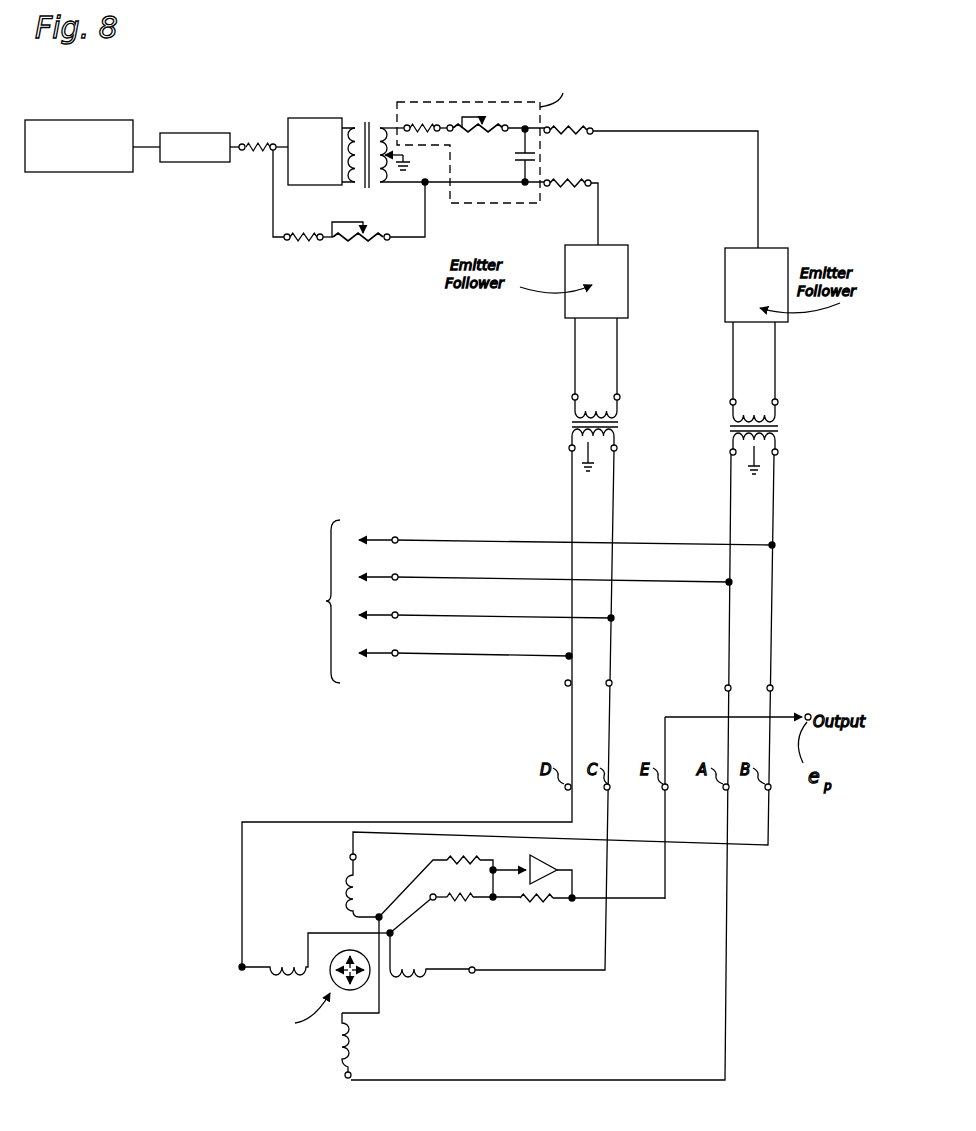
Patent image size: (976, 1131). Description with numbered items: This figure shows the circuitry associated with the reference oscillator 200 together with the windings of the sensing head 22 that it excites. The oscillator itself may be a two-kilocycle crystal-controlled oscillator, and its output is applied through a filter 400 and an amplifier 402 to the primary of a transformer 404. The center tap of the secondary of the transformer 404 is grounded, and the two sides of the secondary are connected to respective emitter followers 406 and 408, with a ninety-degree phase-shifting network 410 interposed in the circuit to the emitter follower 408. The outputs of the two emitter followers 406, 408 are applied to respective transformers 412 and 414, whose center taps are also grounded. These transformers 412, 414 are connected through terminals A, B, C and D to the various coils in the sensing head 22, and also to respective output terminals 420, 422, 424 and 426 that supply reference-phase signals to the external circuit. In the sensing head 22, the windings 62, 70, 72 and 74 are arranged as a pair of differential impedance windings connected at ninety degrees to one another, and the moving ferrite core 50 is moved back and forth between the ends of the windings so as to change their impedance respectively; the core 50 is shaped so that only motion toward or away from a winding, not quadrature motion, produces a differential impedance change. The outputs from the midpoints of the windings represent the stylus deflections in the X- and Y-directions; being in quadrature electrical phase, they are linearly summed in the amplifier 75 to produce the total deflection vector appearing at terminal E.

The reference oscillator 200 is at (92, 118).
The filter 400 is at (197, 133).
The amplifier 402 is at (306, 118).
The transformer 404 is at (357, 110).
The 90° phase-shifting network 410 is at (565, 114).
The emitter follower 406 is at (617, 248).
The emitter follower 408 is at (738, 263).
The transformer 412 is at (571, 424).
The transformer 414 is at (777, 429).
The output terminal 420 is at (398, 538).
The output terminal 422 is at (398, 575).
The output terminal 424 is at (398, 613).
The output terminal 426 is at (398, 651).
The sensing head 22 is at (310, 977).
The core 50 is at (340, 950).
The winding 62 is at (360, 1043).
The winding 70 is at (417, 963).
The winding 72 is at (357, 891).
The winding 74 is at (292, 952).
The amplifier 75 is at (553, 878).